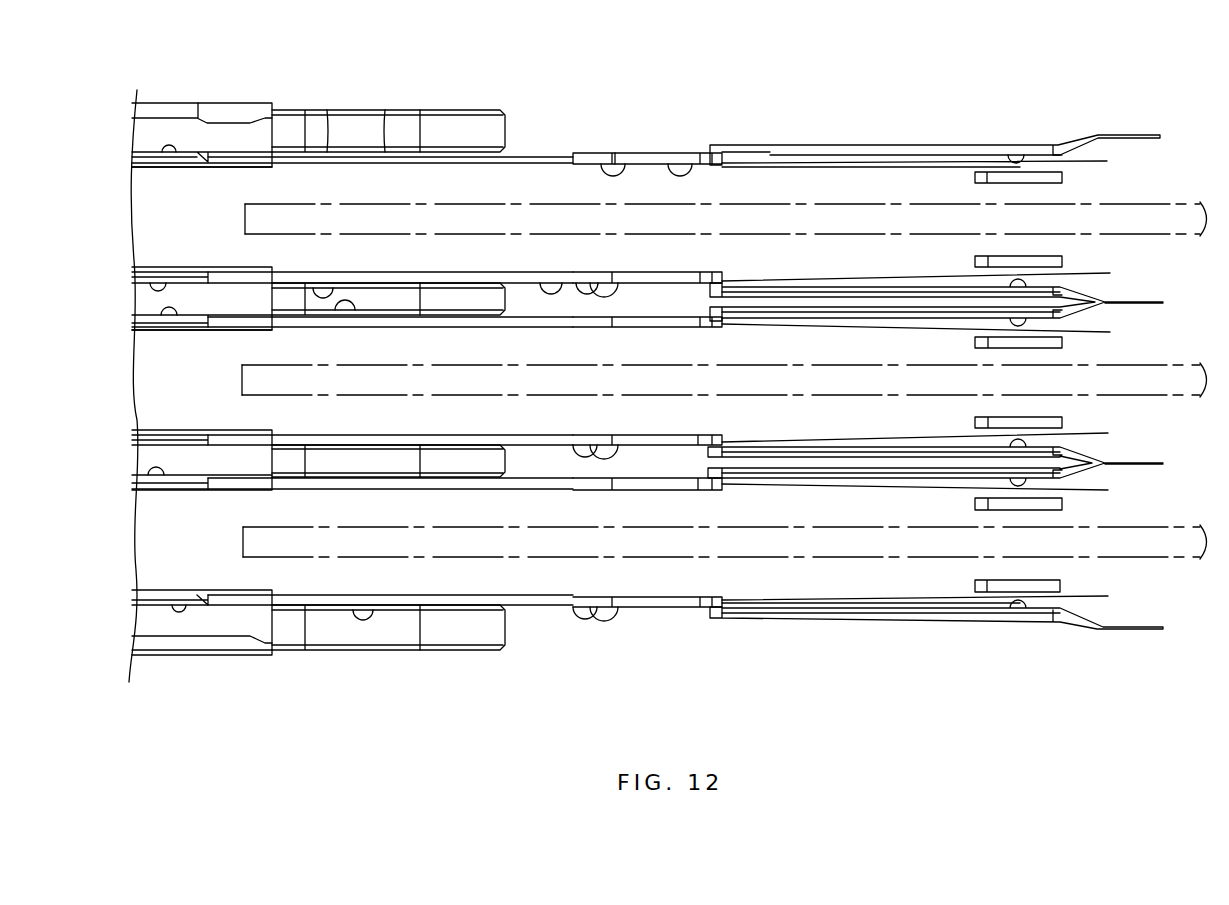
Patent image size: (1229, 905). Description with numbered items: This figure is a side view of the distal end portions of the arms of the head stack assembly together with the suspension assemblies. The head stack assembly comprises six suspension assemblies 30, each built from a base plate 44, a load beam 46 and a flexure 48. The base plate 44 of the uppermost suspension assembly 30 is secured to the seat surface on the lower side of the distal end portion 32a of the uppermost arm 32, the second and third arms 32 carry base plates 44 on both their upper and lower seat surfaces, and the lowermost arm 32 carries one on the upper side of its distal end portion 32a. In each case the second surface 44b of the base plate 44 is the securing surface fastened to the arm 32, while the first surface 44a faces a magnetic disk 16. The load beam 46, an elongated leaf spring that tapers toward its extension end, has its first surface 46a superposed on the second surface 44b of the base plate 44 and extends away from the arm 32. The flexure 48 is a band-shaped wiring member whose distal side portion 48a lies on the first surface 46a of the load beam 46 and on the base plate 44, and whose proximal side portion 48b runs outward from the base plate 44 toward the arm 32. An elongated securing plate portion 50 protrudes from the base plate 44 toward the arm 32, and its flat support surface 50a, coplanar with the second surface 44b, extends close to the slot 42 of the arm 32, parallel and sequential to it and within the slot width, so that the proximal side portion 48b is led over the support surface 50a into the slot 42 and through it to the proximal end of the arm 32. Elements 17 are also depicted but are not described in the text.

The magnetic disk 16 is at (257, 220).
The stopper 17 is at (1000, 177).
The suspension assembly 30 is at (773, 145).
The arm 32 is at (197, 110).
The distal end portion of the arm 32a is at (475, 125).
The slot 42 is at (154, 137).
The base plate 44 is at (605, 160).
The first surface 44a is at (672, 155).
The second surface 44b is at (640, 153).
The load beam 46 is at (846, 150).
The first surface of the load beam 46a is at (835, 157).
The flexure 48 is at (546, 153).
The distal side portion 48a is at (912, 168).
The proximal side portion 48b is at (166, 150).
The securing plate portion 50 is at (323, 150).
The support surface 50a is at (385, 150).